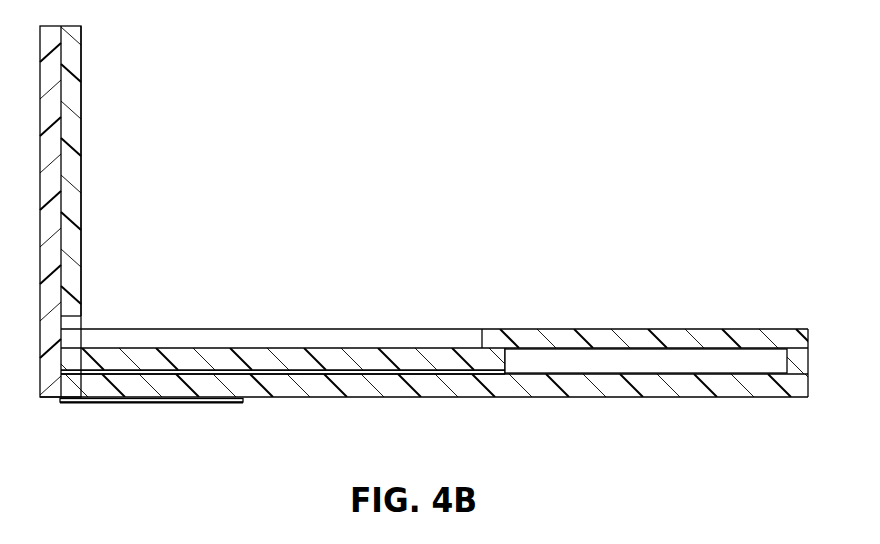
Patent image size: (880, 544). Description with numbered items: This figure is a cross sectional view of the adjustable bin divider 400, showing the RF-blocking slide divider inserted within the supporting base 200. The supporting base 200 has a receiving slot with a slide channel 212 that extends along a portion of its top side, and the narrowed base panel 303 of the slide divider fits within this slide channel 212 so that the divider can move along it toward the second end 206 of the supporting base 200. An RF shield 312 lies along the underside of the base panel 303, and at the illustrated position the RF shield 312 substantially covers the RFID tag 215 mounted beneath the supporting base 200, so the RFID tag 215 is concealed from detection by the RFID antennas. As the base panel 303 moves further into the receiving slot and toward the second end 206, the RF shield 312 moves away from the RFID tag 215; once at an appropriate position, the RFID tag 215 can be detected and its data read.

The adjustable bin divider 400 is at (531, 89).
The supporting base 200 is at (572, 332).
The second end 206 is at (788, 357).
The slide channel 212 is at (341, 329).
The RFID tag 215 is at (108, 402).
The base panel 303 is at (350, 361).
The RF shield 312 is at (278, 371).